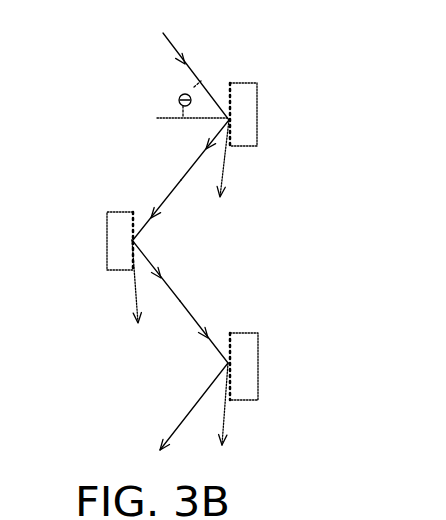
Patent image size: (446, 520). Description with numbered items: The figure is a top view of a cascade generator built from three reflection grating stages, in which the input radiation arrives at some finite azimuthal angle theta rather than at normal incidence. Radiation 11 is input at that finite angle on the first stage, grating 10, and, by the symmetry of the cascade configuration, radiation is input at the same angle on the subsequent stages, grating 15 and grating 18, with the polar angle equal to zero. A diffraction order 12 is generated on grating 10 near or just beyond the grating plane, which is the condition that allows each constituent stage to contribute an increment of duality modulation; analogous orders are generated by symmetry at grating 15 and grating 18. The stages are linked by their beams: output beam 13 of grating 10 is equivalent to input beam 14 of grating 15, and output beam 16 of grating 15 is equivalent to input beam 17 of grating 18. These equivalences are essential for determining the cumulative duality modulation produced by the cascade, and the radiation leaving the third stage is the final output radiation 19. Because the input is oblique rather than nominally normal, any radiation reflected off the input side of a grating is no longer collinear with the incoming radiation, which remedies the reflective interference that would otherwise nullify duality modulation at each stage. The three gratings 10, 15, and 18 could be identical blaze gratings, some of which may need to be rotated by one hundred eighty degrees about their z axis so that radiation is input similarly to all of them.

The grating 10 is at (253, 82).
The input radiation 11 is at (170, 40).
The diffraction order 12 is at (230, 178).
The output beam 13 is at (198, 140).
The input beam 14 is at (160, 222).
The grating 15 is at (118, 205).
The output beam 16 is at (170, 277).
The input beam 17 is at (190, 340).
The grating 18 is at (237, 330).
The final output radiation 19 is at (177, 417).